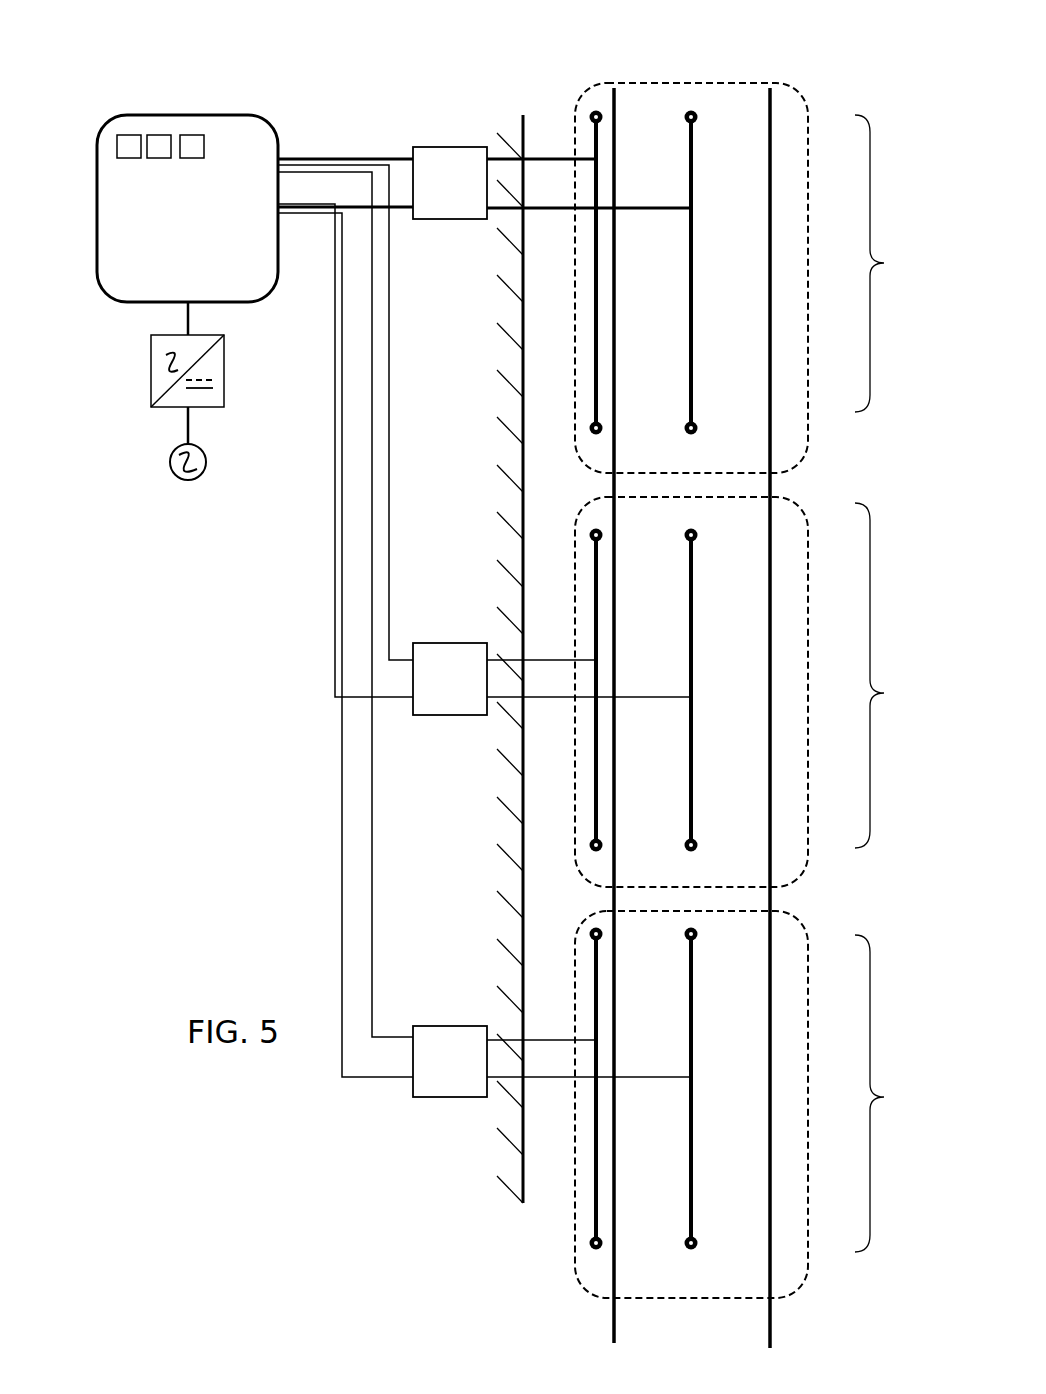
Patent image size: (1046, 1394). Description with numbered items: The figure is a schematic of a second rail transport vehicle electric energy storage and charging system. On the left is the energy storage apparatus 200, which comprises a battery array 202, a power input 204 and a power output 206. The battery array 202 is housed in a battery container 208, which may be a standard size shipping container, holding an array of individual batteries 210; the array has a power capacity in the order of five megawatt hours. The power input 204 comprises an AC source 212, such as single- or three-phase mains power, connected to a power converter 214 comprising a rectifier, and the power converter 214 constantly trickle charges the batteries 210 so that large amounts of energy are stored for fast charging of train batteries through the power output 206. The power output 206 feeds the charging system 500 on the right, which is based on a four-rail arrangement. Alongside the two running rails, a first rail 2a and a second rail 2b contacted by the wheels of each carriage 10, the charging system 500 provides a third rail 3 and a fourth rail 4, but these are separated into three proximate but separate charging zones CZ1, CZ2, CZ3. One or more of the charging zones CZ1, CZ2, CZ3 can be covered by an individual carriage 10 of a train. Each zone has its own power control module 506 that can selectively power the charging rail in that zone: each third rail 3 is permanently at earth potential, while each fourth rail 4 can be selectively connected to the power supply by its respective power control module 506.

The energy storage apparatus 200 is at (414, 87).
The battery container 208 is at (97, 190).
The battery array 202 is at (203, 216).
The individual batteries 210 is at (192, 139).
The power input 204 is at (97, 307).
The power converter 214 is at (218, 365).
The AC source 212 is at (206, 464).
The power output 206 is at (295, 222).
The charging system 500 is at (770, 87).
The power control module 506 is at (434, 195).
The carriage 10 is at (806, 100).
The third rail 3 is at (596, 360).
The fourth rail 4 is at (691, 360).
The first rail 2a is at (614, 462).
The second rail 2b is at (770, 462).
The first charging zone CZ1 is at (898, 263).
The second charging zone CZ2 is at (898, 675).
The third charging zone CZ3 is at (898, 1093).